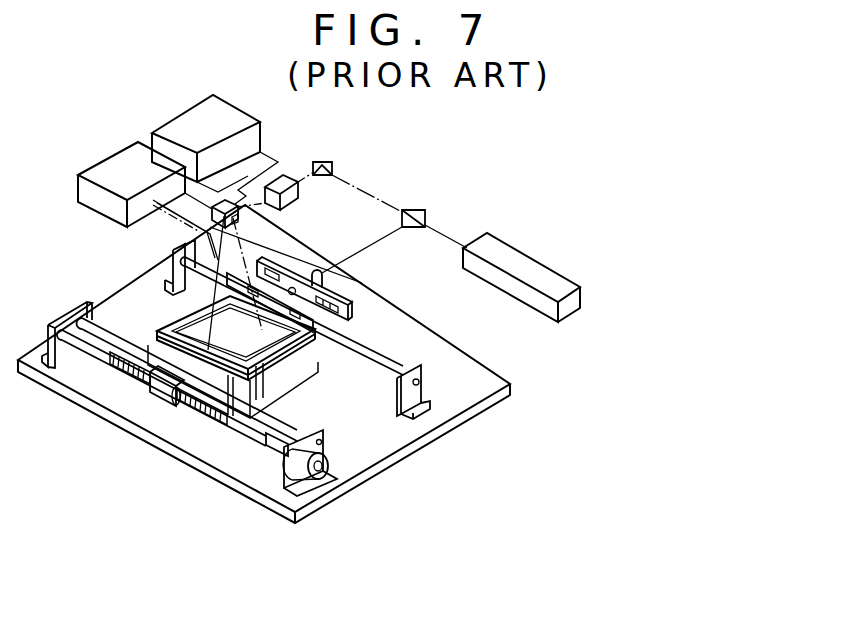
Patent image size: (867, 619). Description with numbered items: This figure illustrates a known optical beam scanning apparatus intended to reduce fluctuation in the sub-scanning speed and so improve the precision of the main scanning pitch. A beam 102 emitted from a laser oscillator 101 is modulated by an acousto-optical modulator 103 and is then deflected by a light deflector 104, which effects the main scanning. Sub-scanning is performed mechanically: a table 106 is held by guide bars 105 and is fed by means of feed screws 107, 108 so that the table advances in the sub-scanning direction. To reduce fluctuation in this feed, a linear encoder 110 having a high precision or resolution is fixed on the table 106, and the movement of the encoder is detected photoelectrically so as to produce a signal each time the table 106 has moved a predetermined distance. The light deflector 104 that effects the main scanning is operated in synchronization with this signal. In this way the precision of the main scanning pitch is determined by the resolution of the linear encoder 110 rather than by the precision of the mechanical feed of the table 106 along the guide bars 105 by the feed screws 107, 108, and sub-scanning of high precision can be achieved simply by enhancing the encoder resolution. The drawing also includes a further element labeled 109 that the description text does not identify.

The laser oscillator 101 is at (550, 278).
The beam 102 is at (447, 237).
The acousto-optical (A/O) modulator 103 is at (287, 177).
The light deflector 104 is at (221, 200).
The guide bars 105 is at (388, 373).
The table 106 is at (258, 372).
The feed screw 107 is at (215, 412).
The feed screw 108 is at (160, 400).
The guide rod 109 is at (143, 372).
The linear encoder 110 is at (345, 302).